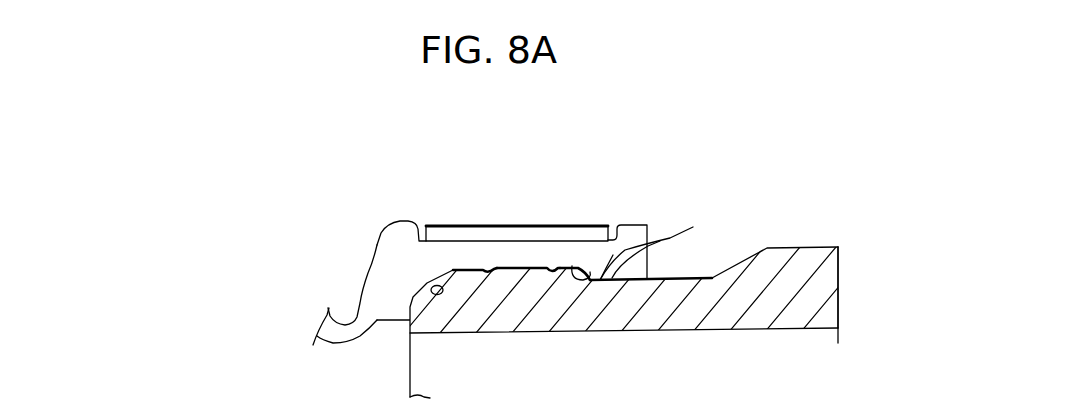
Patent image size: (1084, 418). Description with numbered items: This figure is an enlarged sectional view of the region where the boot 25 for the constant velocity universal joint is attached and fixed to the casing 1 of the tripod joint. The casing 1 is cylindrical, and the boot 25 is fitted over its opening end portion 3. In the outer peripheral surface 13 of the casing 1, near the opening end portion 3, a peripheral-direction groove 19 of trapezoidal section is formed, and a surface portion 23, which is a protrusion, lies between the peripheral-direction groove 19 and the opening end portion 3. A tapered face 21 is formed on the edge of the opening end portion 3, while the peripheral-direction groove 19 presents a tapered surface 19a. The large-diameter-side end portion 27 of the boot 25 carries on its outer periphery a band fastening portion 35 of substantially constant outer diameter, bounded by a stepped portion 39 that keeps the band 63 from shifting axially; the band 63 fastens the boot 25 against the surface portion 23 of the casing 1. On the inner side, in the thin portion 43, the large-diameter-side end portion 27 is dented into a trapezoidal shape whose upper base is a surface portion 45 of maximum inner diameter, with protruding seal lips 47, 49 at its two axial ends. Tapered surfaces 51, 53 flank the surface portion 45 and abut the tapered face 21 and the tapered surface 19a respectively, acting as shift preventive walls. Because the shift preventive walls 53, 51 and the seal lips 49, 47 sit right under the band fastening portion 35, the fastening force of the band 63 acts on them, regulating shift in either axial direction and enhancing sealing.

The casing 1 is at (811, 238).
The opening end portion 3 is at (409, 329).
The outer peripheral surface 13 is at (770, 250).
The peripheral-direction groove 19 is at (680, 278).
The tapered surface 19a is at (660, 241).
The tapered face 21 is at (425, 300).
The surface portion (protrusion) 23 is at (528, 267).
The boot 25 is at (341, 314).
The large-diameter-side end portion 27 is at (572, 202).
The band fastening portion 35 is at (465, 218).
The stepped portion 39 is at (425, 222).
The thin portion 43 is at (624, 216).
The surface portion 45 is at (518, 270).
The seal lip 47 is at (550, 273).
The seal lip 49 is at (488, 273).
The tapered surface 51 is at (600, 280).
The tapered surface 53 is at (441, 286).
The band 63 is at (503, 226).